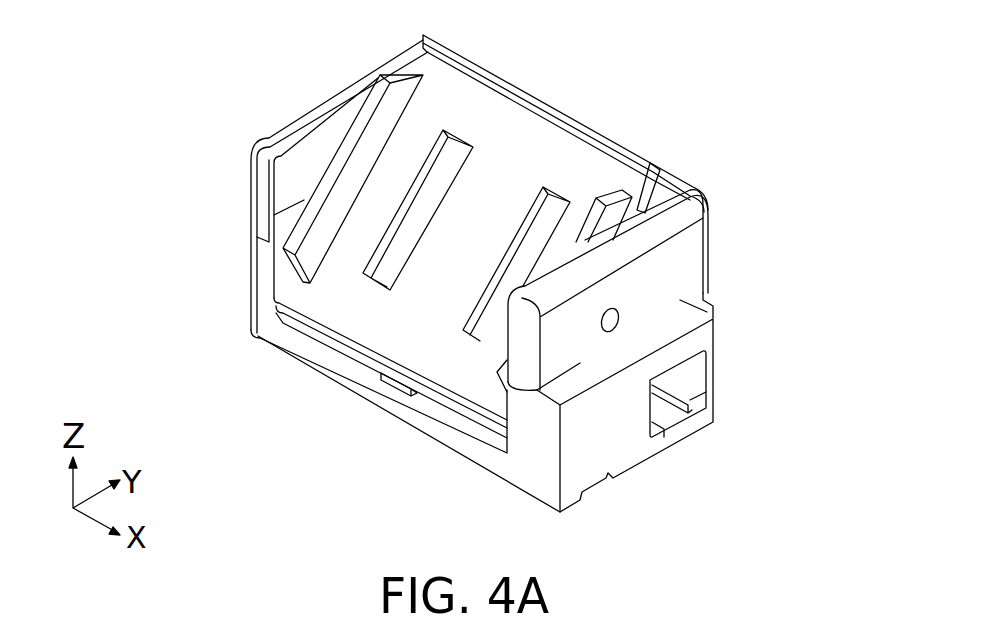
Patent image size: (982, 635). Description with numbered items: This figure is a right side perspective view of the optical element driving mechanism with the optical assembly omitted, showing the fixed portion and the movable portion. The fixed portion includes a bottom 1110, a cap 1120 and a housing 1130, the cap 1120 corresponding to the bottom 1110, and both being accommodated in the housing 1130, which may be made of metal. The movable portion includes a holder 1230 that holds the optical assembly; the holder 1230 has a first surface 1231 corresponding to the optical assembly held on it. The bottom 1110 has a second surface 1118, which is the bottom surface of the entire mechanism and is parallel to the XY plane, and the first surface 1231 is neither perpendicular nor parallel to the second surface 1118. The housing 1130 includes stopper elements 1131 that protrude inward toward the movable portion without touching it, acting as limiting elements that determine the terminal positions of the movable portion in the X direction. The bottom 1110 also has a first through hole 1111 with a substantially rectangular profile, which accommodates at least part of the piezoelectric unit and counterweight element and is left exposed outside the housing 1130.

The bottom 1110 is at (622, 448).
The first through hole 1111 is at (692, 378).
The second surface 1118 is at (412, 427).
The cap 1120 is at (289, 182).
The housing 1130 is at (668, 270).
The stopper element 1131 is at (617, 323).
The holder 1230 is at (520, 92).
The first surface 1231 is at (567, 175).